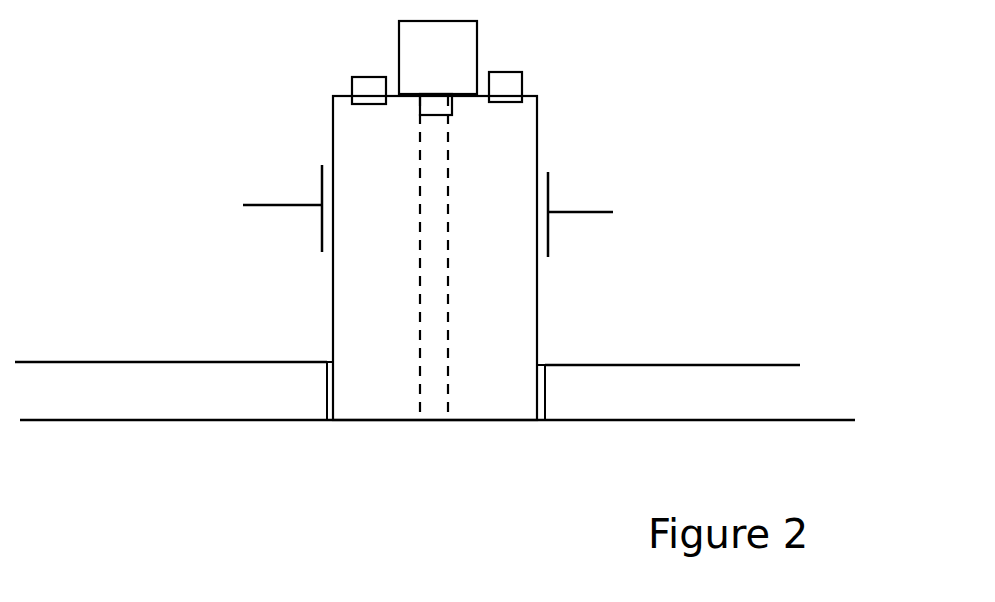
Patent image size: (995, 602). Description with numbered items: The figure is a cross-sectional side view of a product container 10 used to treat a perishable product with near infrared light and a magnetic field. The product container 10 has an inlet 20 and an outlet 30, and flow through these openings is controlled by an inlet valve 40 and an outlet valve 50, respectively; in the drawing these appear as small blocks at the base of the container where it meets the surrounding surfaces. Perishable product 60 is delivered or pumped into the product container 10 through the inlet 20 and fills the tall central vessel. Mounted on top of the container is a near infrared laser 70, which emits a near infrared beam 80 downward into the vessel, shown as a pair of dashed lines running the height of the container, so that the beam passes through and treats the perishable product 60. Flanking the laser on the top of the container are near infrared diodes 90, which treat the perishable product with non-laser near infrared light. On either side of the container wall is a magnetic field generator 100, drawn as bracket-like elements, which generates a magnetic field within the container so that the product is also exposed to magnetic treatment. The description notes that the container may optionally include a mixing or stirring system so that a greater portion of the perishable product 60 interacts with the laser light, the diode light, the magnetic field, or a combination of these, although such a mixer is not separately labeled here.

The product container 10 is at (593, 115).
The inlet 20 is at (230, 400).
The outlet 30 is at (628, 398).
The inlet valve 40 is at (328, 410).
The outlet valve 50 is at (545, 400).
The perishable product 60 is at (373, 295).
The near infrared laser 70 is at (448, 77).
The near infrared beam 80 is at (430, 350).
The near infrared diodes 90 is at (368, 87).
The magnetic field generator 100 is at (275, 203).